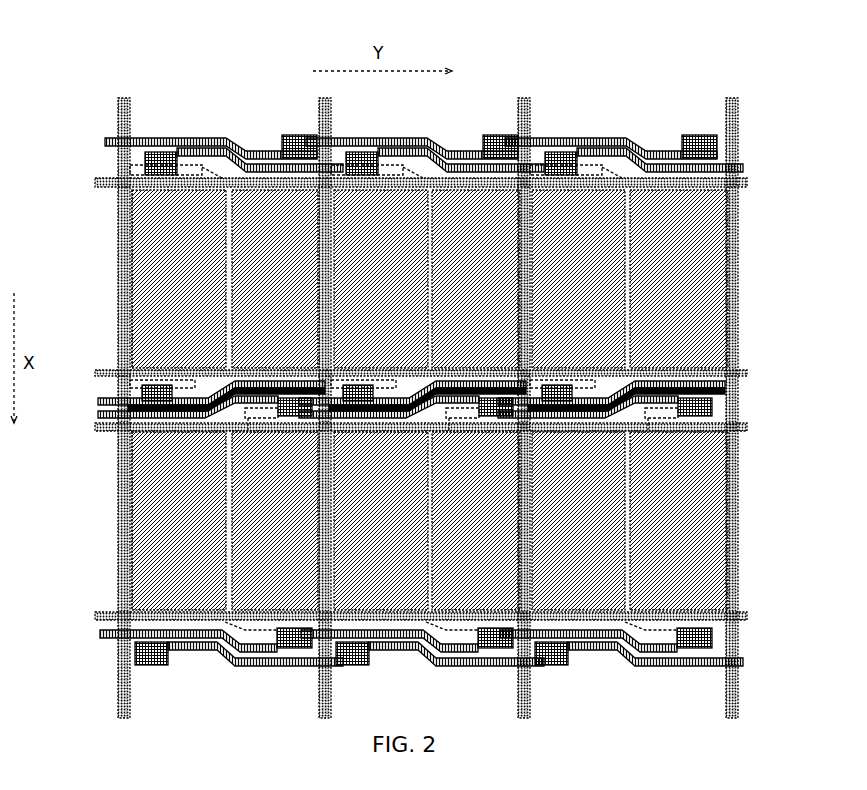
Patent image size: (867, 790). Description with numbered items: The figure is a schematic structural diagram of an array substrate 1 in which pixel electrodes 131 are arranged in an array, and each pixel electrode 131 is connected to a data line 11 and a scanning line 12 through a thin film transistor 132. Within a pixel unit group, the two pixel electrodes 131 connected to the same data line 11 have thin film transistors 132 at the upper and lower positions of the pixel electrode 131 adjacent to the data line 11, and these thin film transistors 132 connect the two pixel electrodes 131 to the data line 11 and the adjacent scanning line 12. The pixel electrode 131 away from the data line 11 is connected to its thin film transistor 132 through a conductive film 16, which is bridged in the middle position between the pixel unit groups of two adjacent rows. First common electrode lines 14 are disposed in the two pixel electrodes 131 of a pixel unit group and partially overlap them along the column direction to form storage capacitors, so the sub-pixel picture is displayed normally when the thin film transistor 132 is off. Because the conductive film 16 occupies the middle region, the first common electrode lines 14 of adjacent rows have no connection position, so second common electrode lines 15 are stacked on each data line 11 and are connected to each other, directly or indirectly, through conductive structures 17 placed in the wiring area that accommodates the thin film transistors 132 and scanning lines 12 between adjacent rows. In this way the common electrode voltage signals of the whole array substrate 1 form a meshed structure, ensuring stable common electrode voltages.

The array substrate 1 is at (700, 52).
The data line 11 is at (131, 106).
The scanning line 12 is at (105, 141).
The pixel electrode 131 is at (117, 247).
The thin film transistor 132 is at (290, 135).
The first common electrode line 14 is at (745, 181).
The second common electrode line 15 is at (117, 208).
The conductive film 16 is at (428, 142).
The conductive structure 17 is at (98, 405).